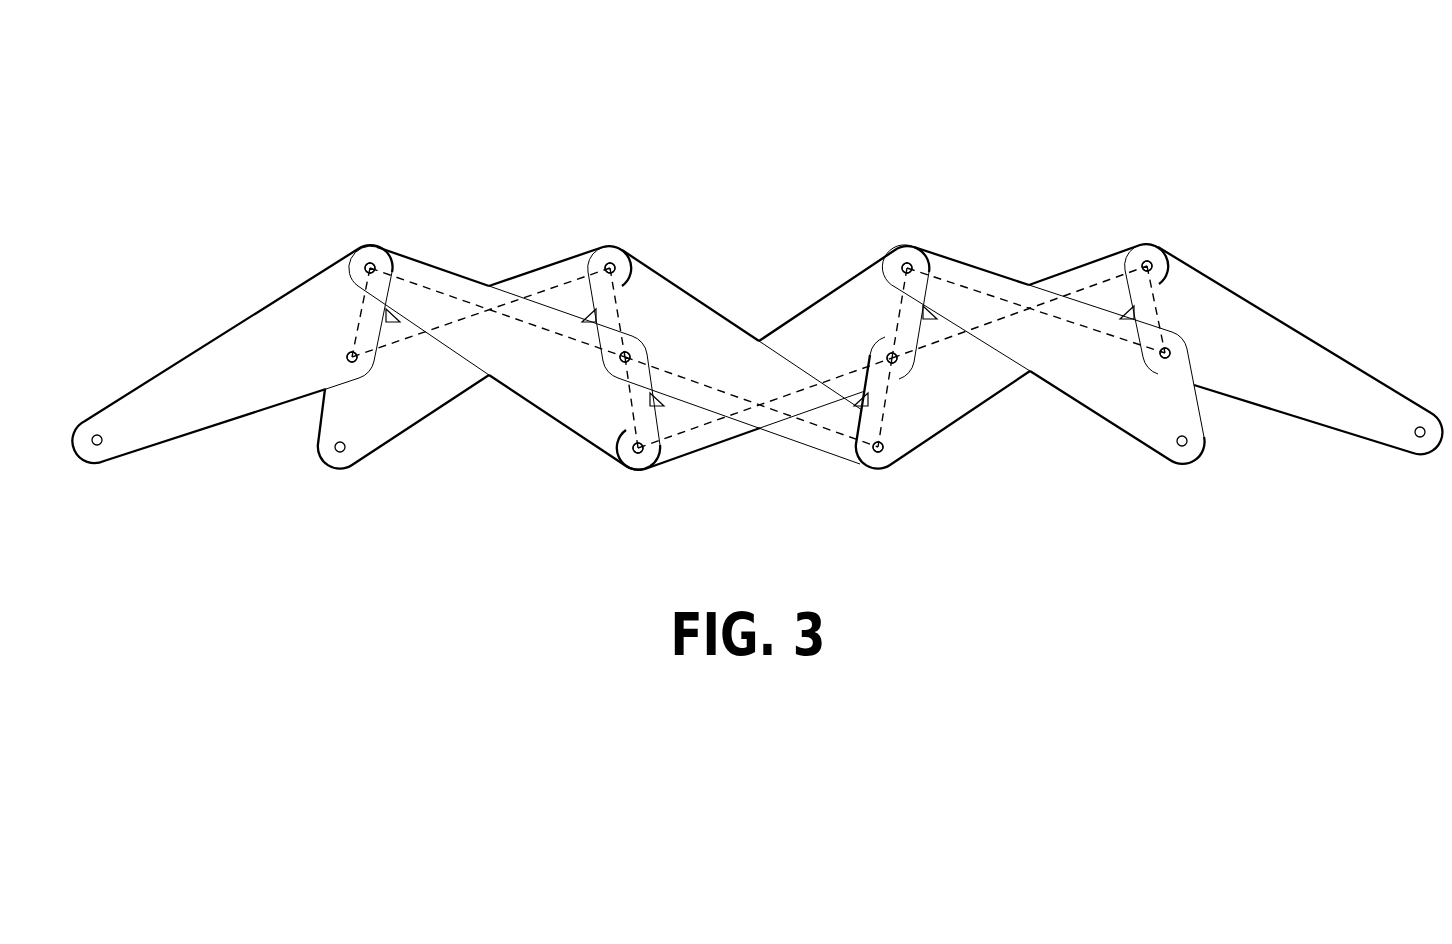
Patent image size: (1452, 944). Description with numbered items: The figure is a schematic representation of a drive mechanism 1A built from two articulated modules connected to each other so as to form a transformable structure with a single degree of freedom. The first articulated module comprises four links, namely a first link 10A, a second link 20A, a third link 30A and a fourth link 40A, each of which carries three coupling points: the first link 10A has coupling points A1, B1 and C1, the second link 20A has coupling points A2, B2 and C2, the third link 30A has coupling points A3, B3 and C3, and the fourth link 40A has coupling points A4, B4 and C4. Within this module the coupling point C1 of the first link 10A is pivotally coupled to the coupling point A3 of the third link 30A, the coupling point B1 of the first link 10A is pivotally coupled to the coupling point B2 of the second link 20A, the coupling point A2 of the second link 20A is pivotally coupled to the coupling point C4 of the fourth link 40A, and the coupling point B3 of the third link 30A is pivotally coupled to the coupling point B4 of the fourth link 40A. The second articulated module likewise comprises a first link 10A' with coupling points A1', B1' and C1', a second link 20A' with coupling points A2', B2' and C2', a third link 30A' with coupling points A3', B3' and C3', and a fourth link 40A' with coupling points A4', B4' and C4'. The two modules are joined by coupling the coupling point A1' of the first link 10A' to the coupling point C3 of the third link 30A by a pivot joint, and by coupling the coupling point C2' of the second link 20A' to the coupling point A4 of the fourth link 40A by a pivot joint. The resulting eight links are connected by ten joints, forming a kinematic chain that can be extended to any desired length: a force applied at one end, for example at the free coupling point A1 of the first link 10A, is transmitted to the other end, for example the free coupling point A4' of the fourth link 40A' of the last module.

The drive mechanism 1A is at (758, 315).
The first link 10A is at (232, 354).
The second link 20A is at (474, 357).
The third link 30A is at (504, 358).
The fourth link 40A is at (725, 355).
The first link 10A' is at (773, 358).
The second link 20A' is at (1012, 356).
The third link 30A' is at (1043, 354).
The fourth link 40A' is at (1284, 349).
The coupling point A1 is at (105, 511).
The coupling point A2 is at (566, 216).
The coupling point A3 is at (414, 215).
The coupling point A4 is at (840, 503).
The coupling point B1 is at (280, 268).
The coupling point B2 is at (421, 429).
The coupling point B3 is at (575, 429).
The coupling point B4 is at (687, 290).
The coupling point C1 is at (322, 213).
The coupling point C2 is at (342, 514).
The coupling point C3 is at (598, 501).
The coupling point C4 is at (657, 216).
The coupling point A1' is at (688, 503).
The coupling point A2' is at (1103, 210).
The coupling point A3' is at (955, 216).
The coupling point A4' is at (1423, 500).
The coupling point B1' is at (822, 268).
The coupling point B2' is at (961, 423).
The coupling point B3' is at (1114, 422).
The coupling point B4' is at (1247, 262).
The coupling point C1' is at (861, 213).
The coupling point C2' is at (926, 503).
The coupling point C3' is at (1190, 511).
The coupling point C4' is at (1194, 210).